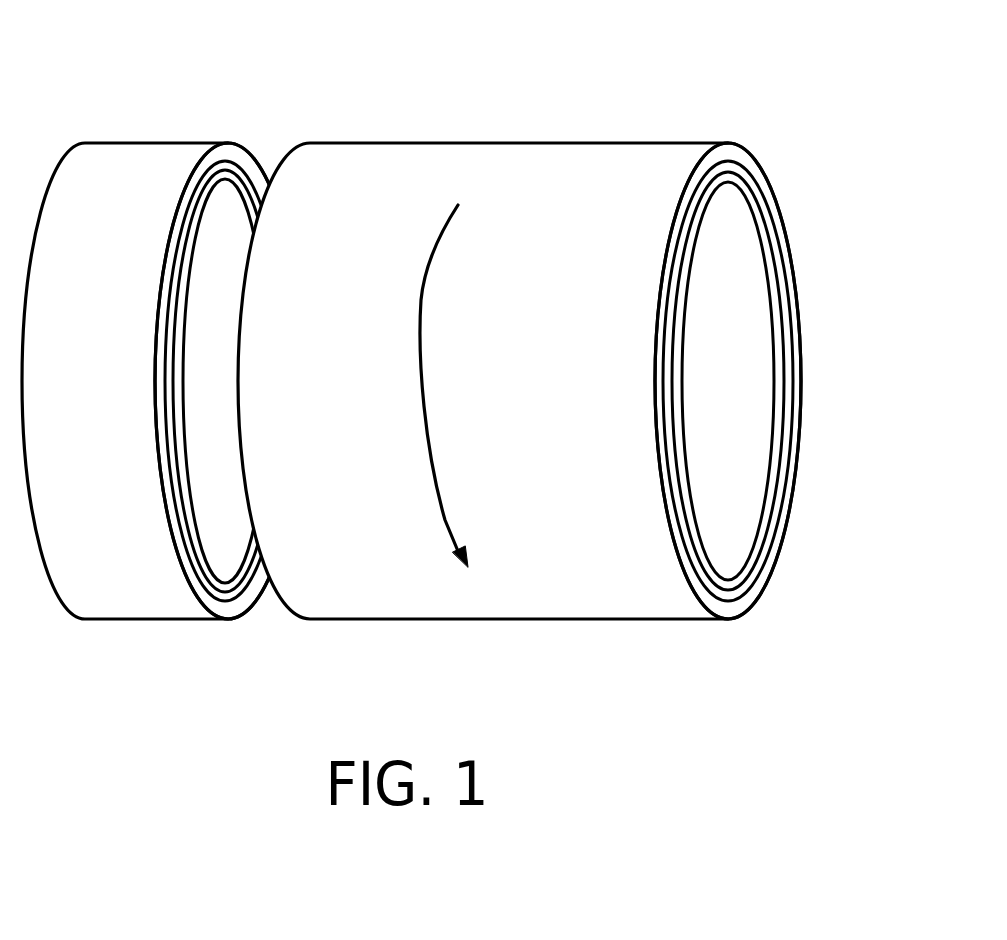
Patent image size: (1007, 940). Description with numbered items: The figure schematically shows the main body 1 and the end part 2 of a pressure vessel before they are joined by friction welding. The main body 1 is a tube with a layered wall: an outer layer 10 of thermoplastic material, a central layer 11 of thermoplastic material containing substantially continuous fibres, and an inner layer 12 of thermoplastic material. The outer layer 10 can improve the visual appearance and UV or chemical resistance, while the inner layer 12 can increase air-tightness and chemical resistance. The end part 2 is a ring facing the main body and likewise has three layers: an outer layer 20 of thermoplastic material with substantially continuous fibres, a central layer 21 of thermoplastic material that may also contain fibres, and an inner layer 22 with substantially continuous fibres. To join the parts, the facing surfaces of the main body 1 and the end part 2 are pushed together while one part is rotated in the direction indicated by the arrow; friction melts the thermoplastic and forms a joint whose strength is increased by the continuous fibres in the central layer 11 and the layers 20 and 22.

The main body 1 is at (459, 177).
The end part 2 is at (136, 170).
The outer layer 10 is at (735, 152).
The central layer 11 is at (756, 186).
The inner layer 12 is at (770, 257).
The outer layer 20 is at (222, 155).
The central layer 21 is at (248, 172).
The inner layer 22 is at (262, 182).